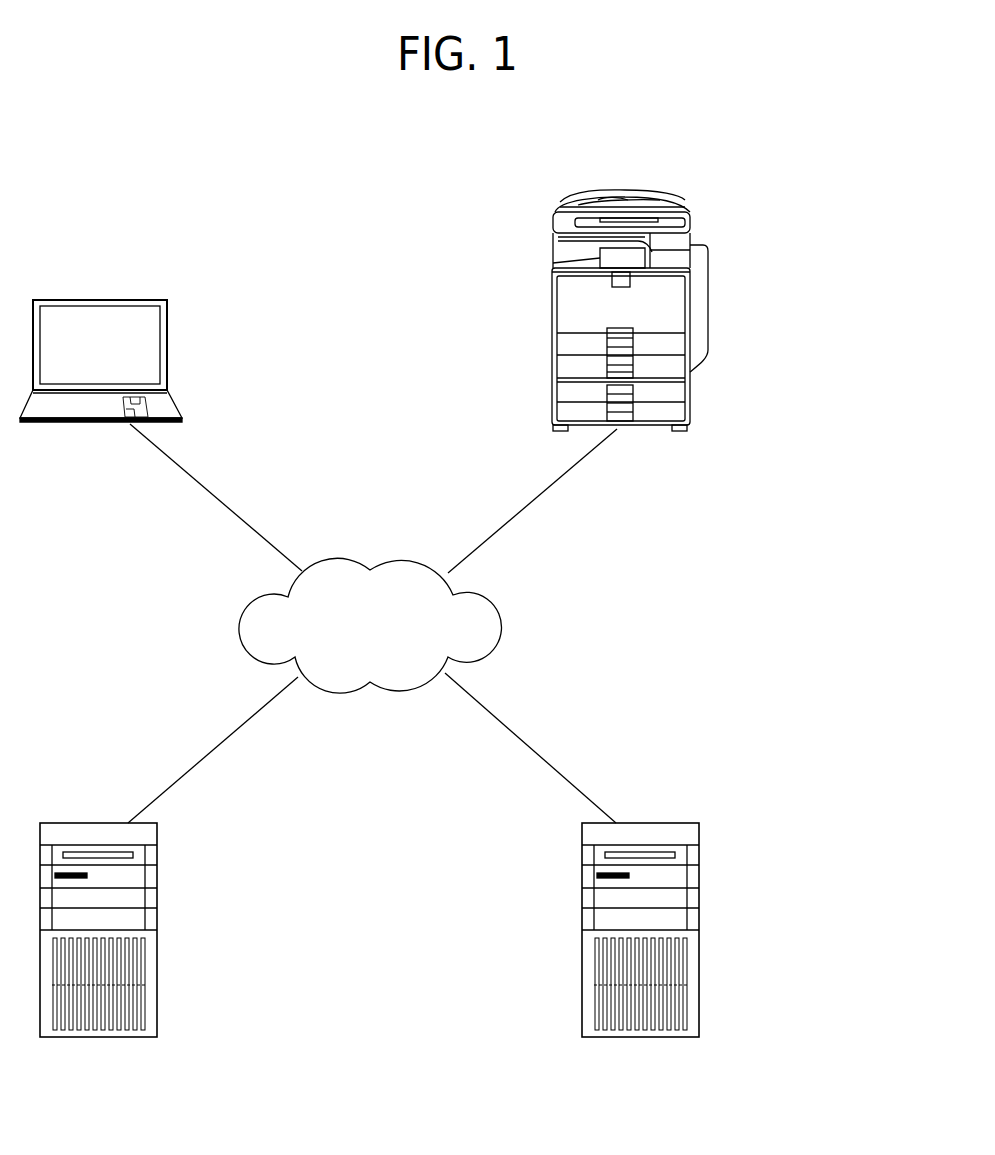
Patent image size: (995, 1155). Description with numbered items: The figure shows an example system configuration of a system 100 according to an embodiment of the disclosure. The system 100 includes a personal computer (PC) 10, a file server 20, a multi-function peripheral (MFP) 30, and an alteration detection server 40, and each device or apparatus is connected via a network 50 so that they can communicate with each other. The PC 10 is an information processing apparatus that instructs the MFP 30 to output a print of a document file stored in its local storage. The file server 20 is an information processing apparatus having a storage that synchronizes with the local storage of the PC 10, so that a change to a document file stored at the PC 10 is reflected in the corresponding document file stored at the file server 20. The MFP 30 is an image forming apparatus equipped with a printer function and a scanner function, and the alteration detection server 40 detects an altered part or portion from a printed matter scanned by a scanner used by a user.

The system 100 is at (72, 178).
The personal computer (PC) 10 is at (168, 341).
The multi-function peripheral (MFP) 30 is at (708, 294).
The network 50 is at (502, 625).
The file server 20 is at (157, 893).
The alteration detection server 40 is at (699, 895).